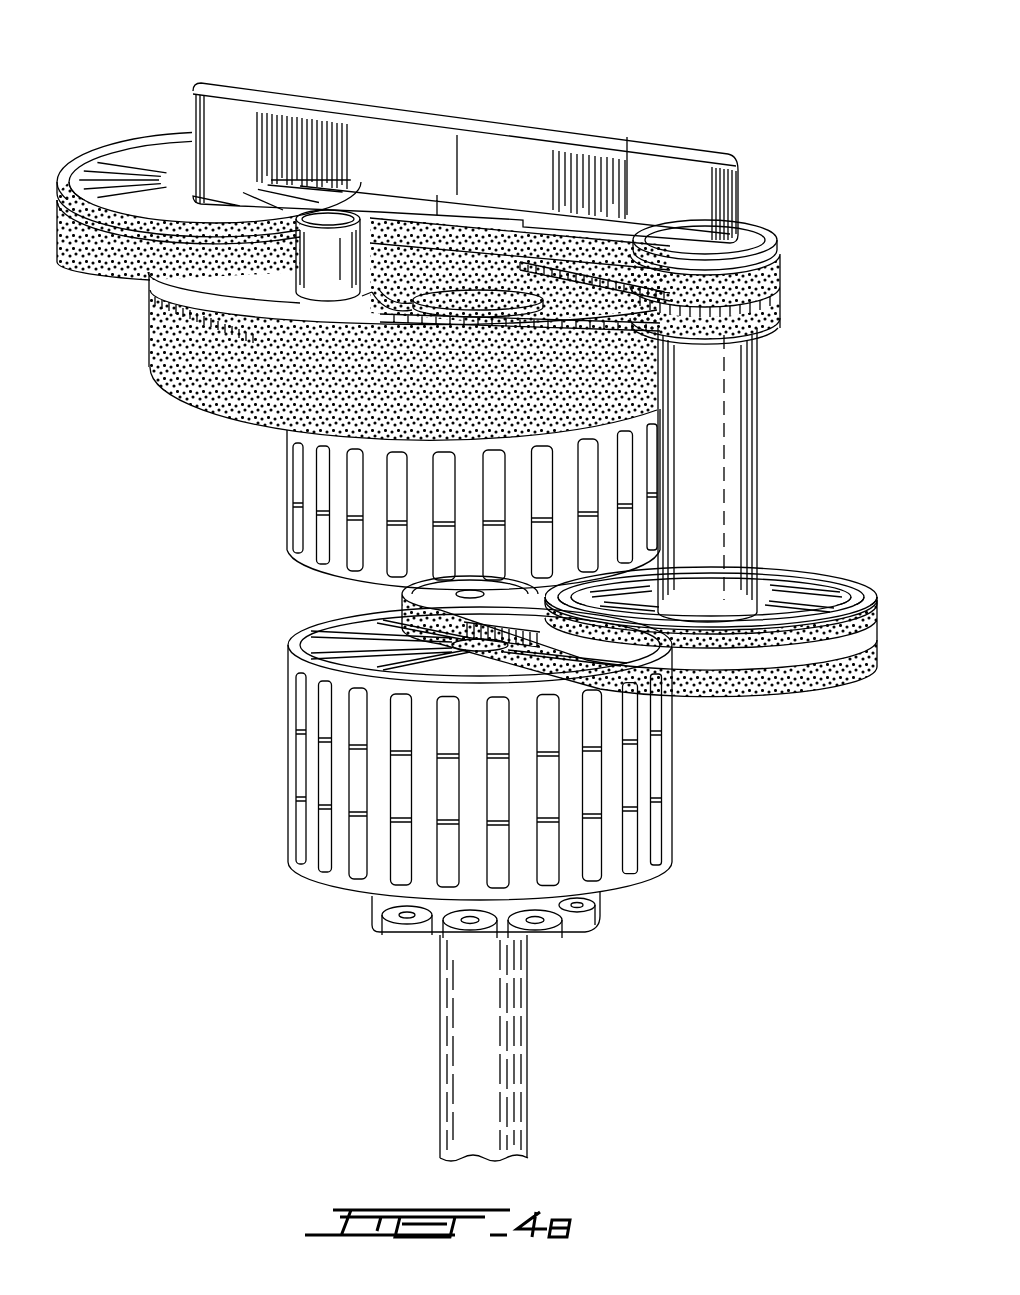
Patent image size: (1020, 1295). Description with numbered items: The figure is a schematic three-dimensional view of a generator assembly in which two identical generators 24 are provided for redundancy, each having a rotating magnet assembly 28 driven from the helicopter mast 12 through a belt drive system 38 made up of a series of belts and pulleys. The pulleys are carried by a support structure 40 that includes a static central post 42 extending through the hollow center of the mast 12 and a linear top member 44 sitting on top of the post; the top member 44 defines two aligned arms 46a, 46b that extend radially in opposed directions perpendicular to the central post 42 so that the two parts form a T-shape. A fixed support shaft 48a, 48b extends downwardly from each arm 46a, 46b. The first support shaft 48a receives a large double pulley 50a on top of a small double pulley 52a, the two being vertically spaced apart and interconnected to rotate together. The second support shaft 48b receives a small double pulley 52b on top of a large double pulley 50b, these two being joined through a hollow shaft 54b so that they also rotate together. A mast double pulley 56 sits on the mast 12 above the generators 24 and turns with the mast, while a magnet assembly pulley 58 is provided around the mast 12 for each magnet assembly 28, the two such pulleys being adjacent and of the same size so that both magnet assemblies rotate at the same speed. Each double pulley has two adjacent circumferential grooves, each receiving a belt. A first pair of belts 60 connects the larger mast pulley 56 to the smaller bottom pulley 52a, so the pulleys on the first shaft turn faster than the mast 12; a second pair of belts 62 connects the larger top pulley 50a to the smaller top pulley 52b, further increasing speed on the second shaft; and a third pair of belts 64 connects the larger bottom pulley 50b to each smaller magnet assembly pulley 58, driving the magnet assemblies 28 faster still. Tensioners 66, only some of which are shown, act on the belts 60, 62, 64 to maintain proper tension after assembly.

The mast 12 is at (498, 308).
The generator 24 is at (264, 671).
The magnet assembly 28 is at (290, 653).
The drive system 38 is at (760, 367).
The support structure 40 is at (615, 108).
The central post 42 is at (482, 218).
The top member 44 is at (744, 179).
The arm 46a is at (240, 132).
The arm 46b is at (668, 188).
The first support shaft 48a is at (220, 188).
The second support shaft 48b is at (710, 700).
The large double pulley 50a is at (112, 158).
The large double pulley 50b is at (825, 580).
The small double pulley 52a is at (218, 298).
The small double pulley 52b is at (770, 278).
The hollow shaft 54b is at (722, 443).
The mast double pulley 56 is at (383, 307).
The magnet assembly pulley 58 is at (540, 637).
The first pair of belts 60 is at (103, 243).
The second pair of belts 62 is at (227, 357).
The third pair of belts 64 is at (870, 620).
The tensioner 66 is at (328, 263).